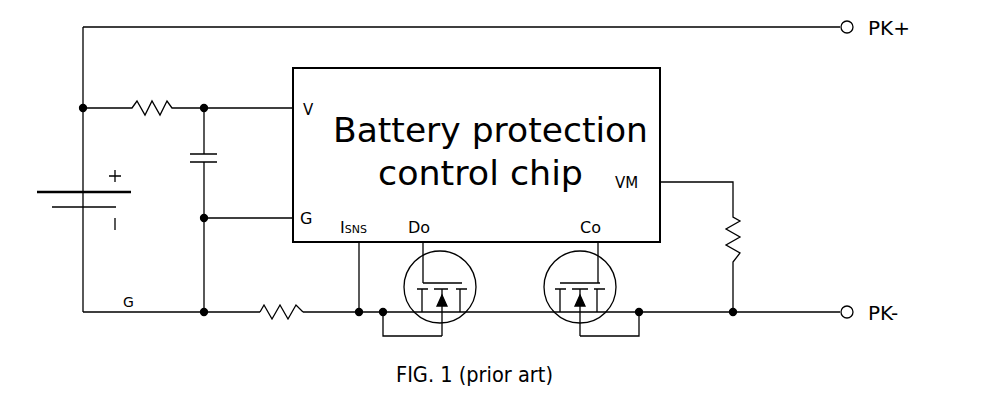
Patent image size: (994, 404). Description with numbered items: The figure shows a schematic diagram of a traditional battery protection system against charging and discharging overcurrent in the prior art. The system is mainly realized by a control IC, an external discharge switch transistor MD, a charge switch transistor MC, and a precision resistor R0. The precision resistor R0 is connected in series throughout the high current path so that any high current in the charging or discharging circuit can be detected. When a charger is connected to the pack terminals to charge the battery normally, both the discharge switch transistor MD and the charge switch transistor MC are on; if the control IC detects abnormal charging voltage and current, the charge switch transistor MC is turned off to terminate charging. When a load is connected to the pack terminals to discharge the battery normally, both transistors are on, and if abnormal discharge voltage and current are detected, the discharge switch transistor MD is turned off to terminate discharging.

The precision resistor R0 is at (267, 299).
The discharge switch transistor MD is at (428, 293).
The charge switch transistor MC is at (590, 293).